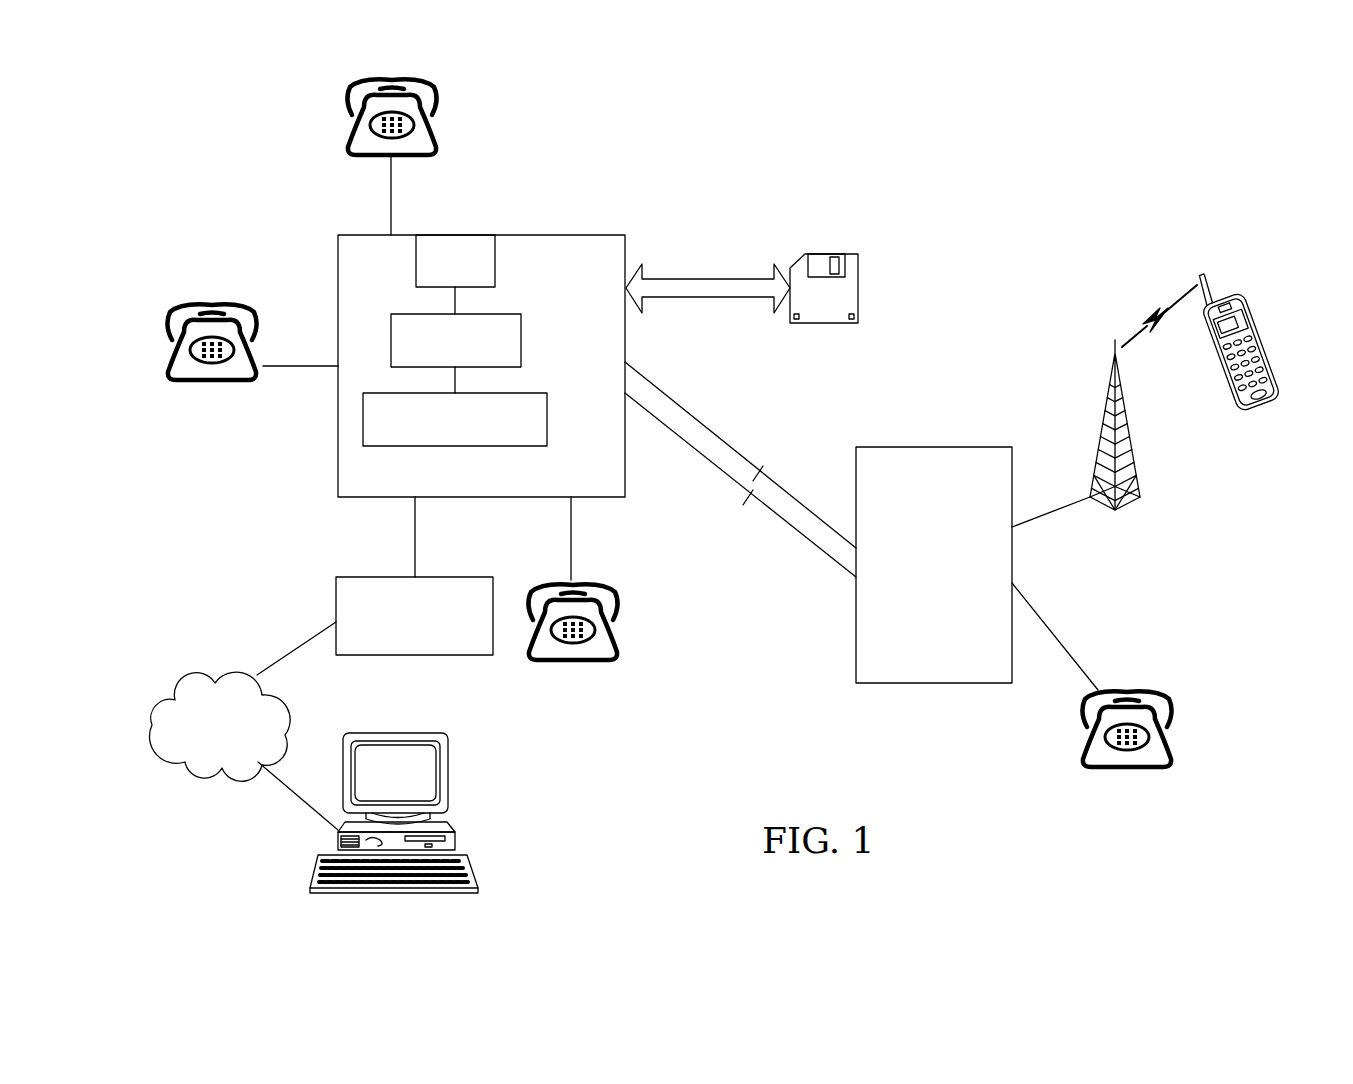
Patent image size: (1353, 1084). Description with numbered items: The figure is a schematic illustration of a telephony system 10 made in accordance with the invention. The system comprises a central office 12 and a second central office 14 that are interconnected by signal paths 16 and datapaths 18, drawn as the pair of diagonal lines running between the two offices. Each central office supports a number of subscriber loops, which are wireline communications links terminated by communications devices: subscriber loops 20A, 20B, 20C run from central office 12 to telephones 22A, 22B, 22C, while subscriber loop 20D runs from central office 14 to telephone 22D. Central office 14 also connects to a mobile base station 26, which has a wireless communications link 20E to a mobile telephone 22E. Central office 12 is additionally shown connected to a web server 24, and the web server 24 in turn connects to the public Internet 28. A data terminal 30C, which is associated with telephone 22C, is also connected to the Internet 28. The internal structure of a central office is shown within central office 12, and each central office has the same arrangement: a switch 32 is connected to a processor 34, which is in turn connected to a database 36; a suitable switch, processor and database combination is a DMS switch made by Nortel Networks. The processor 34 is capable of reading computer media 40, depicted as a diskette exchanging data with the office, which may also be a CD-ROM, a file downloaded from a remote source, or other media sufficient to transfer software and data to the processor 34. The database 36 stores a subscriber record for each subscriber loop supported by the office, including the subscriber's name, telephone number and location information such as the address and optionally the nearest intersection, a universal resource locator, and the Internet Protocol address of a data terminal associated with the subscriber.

The telephony system 10 is at (1002, 178).
The central office 12 is at (625, 470).
The central office 14 is at (856, 658).
The signal paths 16 is at (787, 523).
The datapaths 18 is at (703, 428).
The subscriber loop 20A is at (295, 366).
The subscriber loop 20B is at (391, 196).
The subscriber loop 20C is at (571, 540).
The subscriber loop 20D is at (1062, 640).
The wireless communications link 20E is at (1145, 315).
The telephone 22A is at (210, 382).
The telephone 22B is at (442, 95).
The telephone 22C is at (623, 636).
The telephone 22D is at (1177, 745).
The mobile telephone 22E is at (1250, 299).
The web server 24 is at (336, 580).
The mobile base station 26 is at (1140, 455).
The public Internet 28 is at (150, 718).
The data terminal 30C is at (312, 860).
The switch 32 is at (547, 430).
The processor 34 is at (521, 328).
The database 36 is at (495, 262).
The computer media 40 is at (858, 270).